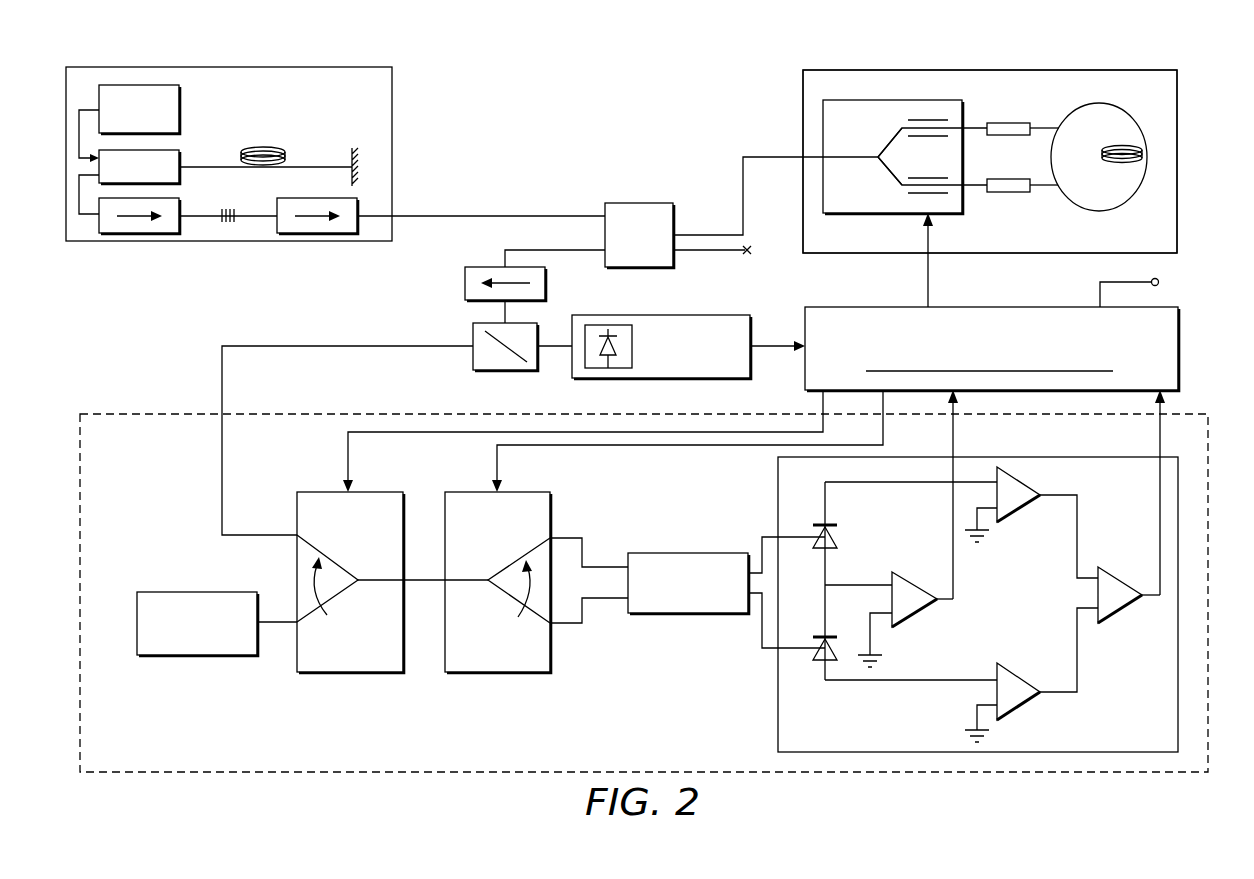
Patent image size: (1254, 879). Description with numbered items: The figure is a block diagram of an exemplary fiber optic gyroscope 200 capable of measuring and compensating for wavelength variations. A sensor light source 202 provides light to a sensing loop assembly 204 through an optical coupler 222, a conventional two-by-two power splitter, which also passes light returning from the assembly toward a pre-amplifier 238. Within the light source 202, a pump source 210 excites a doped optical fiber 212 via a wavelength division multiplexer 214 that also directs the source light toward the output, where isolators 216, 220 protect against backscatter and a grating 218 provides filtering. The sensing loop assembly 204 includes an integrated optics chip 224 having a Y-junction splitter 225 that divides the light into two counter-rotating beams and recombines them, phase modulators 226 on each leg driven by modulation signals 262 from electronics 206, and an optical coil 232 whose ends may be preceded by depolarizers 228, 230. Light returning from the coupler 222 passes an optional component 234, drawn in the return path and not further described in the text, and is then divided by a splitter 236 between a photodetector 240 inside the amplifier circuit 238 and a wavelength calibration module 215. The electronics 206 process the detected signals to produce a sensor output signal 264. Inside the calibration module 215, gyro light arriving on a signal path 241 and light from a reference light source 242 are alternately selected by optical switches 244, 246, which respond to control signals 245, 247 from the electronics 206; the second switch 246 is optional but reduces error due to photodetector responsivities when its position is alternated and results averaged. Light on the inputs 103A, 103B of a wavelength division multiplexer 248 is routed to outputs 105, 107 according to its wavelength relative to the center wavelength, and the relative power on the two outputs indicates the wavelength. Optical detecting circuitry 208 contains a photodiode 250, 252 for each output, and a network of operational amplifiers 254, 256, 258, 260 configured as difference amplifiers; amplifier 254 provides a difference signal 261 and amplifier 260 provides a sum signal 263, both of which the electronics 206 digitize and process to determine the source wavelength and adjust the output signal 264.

The fiber optic gyroscope 200 is at (1199, 65).
The sensor light source 202 is at (393, 100).
The sensing loop assembly 204 is at (1130, 243).
The electronics 206 is at (1130, 378).
The optical detecting circuitry 208 is at (1133, 741).
The pump source 210 is at (180, 109).
The doped optical fiber 212 is at (270, 148).
The wavelength division multiplexer 214 is at (180, 177).
The isolator 216 is at (140, 234).
The grating 218 is at (228, 223).
The isolator 220 is at (318, 234).
The optical coupler 222 is at (674, 204).
The integrated optics chip 224 is at (842, 201).
The splitter 225 is at (876, 155).
The phase modulator 226 is at (942, 177).
The depolarizer 228 is at (1034, 179).
The depolarizer 230 is at (1010, 123).
The optical coil 232 is at (1112, 146).
The optional isolator 234 is at (481, 267).
The splitter 236 is at (481, 323).
The pre-amplifier 238 is at (688, 351).
The photodetector 240 is at (608, 369).
The signal path 241 is at (222, 487).
The reference light source 242 is at (151, 592).
The optical switch 244 is at (311, 492).
The control signal 245 is at (739, 432).
The optical switch 246 is at (541, 492).
The control signal 247 is at (740, 446).
The wavelength division multiplexer 248 is at (690, 614).
The input 103A is at (582, 537).
The input 103B is at (582, 628).
The output 105 is at (762, 536).
The output 107 is at (762, 650).
The photodiode 250 is at (836, 541).
The photodiode 252 is at (818, 657).
The operational amplifier 254 is at (916, 580).
The operational amplifier 256 is at (1026, 481).
The operational amplifier 258 is at (1021, 667).
The operational amplifier 260 is at (1119, 572).
The difference signal 261 is at (956, 439).
The modulation signal 262 is at (928, 279).
The sum signal 263 is at (1158, 441).
The sensor output signal 264 is at (1100, 294).
The wavelength calibration module 215 is at (98, 413).